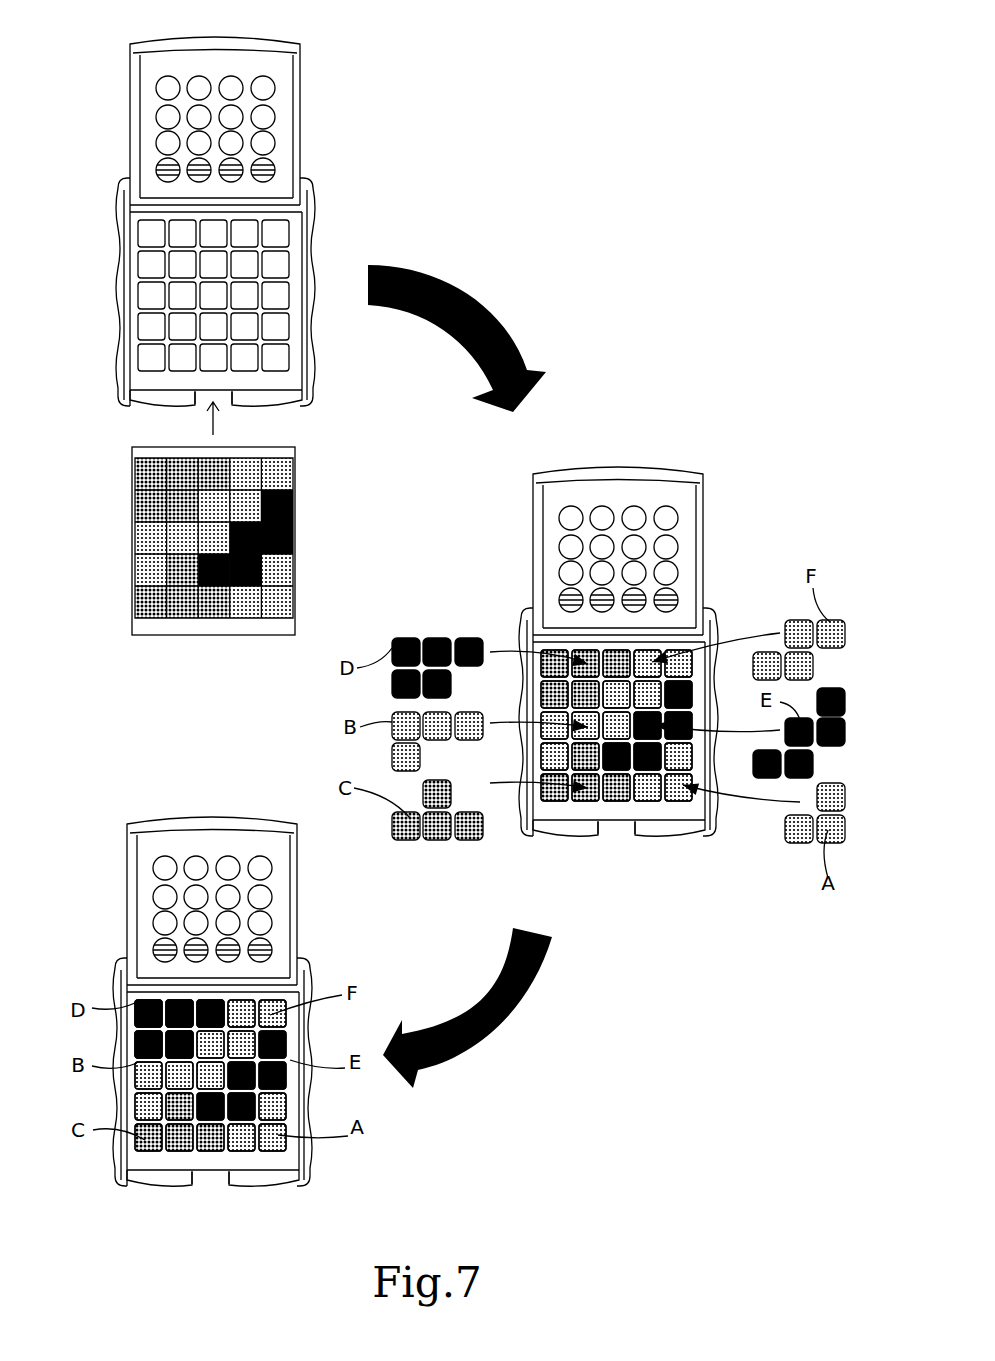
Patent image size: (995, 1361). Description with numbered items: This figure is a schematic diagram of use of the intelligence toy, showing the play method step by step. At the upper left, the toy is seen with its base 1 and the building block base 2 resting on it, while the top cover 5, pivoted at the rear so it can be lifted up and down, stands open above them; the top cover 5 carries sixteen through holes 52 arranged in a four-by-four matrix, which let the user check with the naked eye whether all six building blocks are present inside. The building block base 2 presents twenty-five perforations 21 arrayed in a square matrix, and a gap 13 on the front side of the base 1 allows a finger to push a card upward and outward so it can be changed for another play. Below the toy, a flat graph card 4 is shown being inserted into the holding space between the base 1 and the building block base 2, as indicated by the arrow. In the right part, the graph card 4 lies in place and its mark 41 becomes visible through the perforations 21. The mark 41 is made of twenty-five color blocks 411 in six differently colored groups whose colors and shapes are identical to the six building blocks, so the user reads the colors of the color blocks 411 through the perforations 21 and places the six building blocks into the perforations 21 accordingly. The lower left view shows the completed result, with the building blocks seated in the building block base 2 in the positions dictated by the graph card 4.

The base 1 is at (415, 644).
The building block base 2 is at (408, 715).
The graph card 4 is at (372, 673).
The top cover 5 is at (428, 511).
The gap 13 is at (227, 400).
The perforations 21 is at (163, 297).
The graph card mark 41 is at (374, 679).
The through holes 52 is at (160, 84).
The color blocks 411 is at (277, 567).